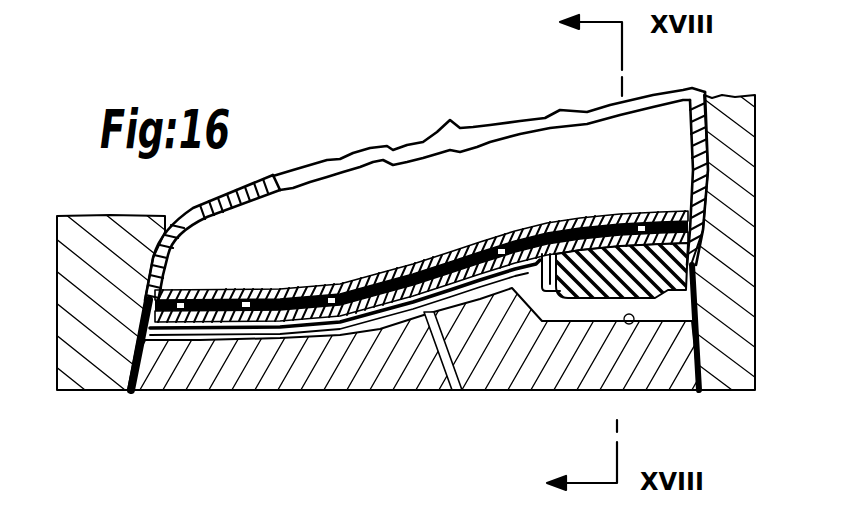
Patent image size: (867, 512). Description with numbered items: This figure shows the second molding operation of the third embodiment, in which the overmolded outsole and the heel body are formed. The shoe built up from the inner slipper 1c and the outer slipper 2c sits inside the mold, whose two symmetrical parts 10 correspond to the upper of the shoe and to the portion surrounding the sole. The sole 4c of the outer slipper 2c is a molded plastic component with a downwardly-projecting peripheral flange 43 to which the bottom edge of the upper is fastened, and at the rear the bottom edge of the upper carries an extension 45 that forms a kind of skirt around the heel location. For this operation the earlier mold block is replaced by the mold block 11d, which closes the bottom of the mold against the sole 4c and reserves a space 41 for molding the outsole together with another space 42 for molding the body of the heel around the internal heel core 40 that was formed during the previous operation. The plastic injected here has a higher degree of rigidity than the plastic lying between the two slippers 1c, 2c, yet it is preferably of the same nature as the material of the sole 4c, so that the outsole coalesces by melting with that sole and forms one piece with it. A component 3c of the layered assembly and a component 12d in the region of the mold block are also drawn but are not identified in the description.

The inner slipper 1c is at (235, 214).
The outer slipper 2c is at (241, 185).
The insole layer 3c is at (300, 290).
The sole of the outer slipper 4c is at (491, 275).
The symmetrical mold parts 10 is at (72, 297).
The mold block 11d is at (217, 374).
The sole insert 12d is at (442, 368).
The heel core 40 is at (665, 268).
The space for molding the outsole 41 is at (333, 335).
The space for molding the body of the heel 42 is at (627, 325).
The peripheral flange 43 is at (277, 329).
The extension 45 is at (542, 256).